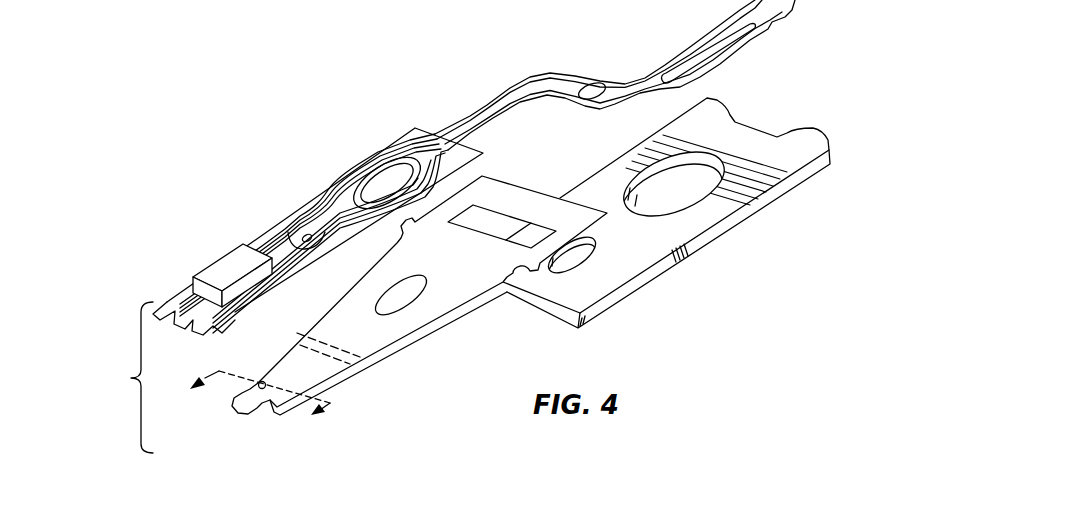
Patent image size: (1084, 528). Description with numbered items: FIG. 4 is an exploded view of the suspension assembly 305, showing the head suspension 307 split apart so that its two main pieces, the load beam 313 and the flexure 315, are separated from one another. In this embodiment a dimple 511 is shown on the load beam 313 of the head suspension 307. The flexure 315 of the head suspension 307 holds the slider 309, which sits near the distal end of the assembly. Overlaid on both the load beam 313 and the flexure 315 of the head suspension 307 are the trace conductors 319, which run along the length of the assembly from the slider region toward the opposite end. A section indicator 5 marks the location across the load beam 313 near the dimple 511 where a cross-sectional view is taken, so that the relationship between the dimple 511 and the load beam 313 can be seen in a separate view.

The head gimbal assembly (suspension) 305 is at (294, 138).
The head suspension 307 is at (116, 377).
The slider 309 is at (228, 262).
The load beam 313 is at (412, 333).
The flexure 315 is at (170, 300).
The trace conductors 319 is at (560, 73).
The dimple 511 is at (262, 381).
The section line 5- 5 is at (252, 404).